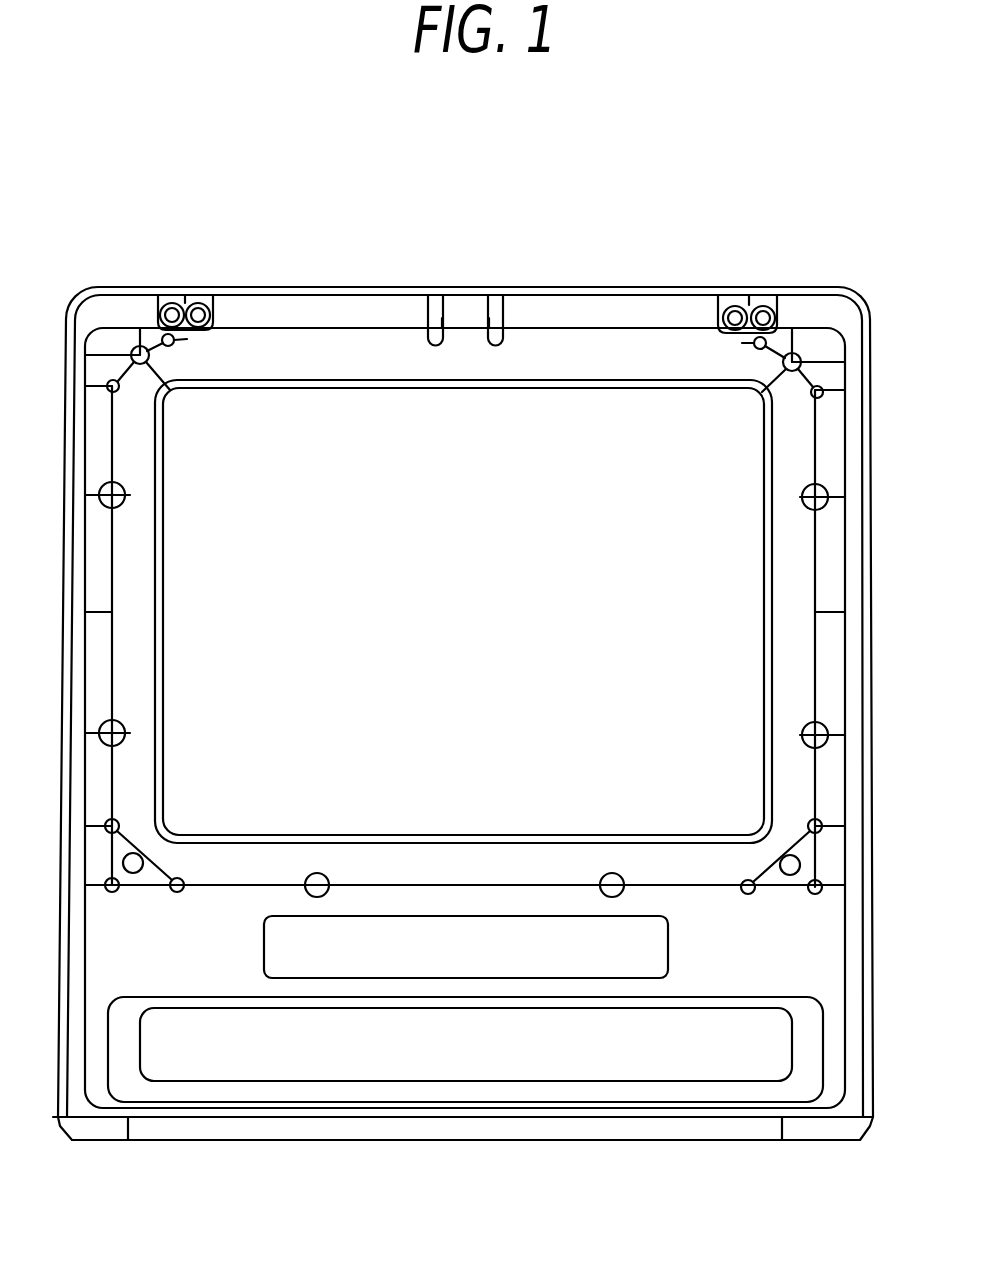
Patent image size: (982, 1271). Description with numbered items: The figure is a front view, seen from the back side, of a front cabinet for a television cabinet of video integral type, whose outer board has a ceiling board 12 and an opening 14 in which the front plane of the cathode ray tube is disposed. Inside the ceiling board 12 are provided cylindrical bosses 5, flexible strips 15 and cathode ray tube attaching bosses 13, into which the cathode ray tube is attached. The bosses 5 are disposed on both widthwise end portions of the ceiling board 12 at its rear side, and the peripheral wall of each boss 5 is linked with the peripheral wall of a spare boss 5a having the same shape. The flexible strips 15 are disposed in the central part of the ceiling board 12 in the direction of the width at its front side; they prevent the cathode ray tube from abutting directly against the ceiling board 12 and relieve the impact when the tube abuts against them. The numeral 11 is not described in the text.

The cylindrical boss 5 is at (172, 292).
The spare boss 5a is at (200, 292).
The front cabinet 11 is at (470, 362).
The ceiling board 12 is at (553, 287).
The cathode ray tube attaching boss 13 is at (170, 392).
The opening 14 is at (163, 598).
The flexible strip 15 is at (427, 342).